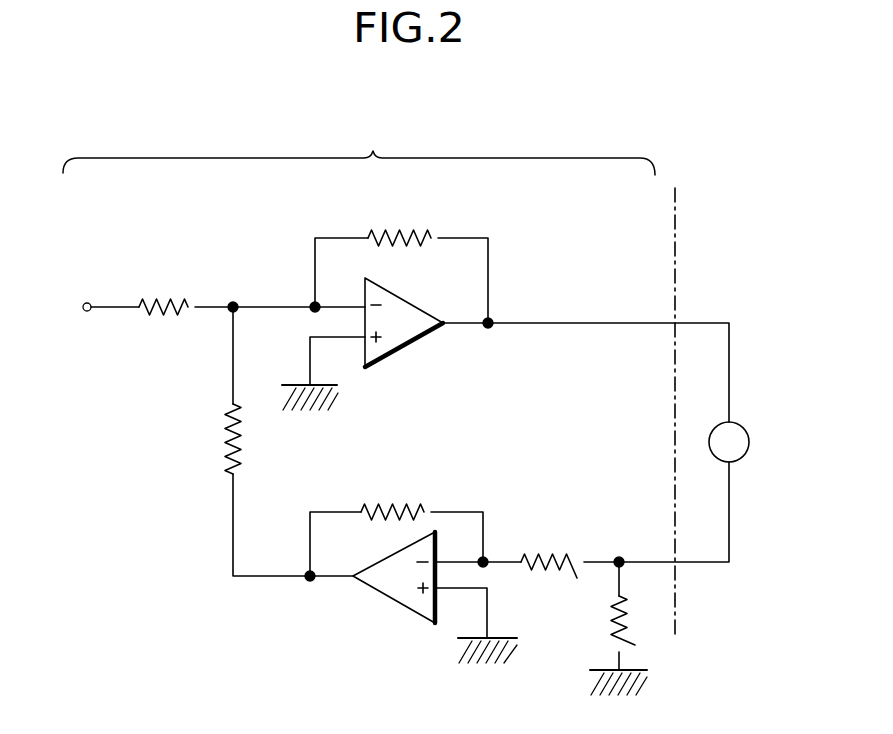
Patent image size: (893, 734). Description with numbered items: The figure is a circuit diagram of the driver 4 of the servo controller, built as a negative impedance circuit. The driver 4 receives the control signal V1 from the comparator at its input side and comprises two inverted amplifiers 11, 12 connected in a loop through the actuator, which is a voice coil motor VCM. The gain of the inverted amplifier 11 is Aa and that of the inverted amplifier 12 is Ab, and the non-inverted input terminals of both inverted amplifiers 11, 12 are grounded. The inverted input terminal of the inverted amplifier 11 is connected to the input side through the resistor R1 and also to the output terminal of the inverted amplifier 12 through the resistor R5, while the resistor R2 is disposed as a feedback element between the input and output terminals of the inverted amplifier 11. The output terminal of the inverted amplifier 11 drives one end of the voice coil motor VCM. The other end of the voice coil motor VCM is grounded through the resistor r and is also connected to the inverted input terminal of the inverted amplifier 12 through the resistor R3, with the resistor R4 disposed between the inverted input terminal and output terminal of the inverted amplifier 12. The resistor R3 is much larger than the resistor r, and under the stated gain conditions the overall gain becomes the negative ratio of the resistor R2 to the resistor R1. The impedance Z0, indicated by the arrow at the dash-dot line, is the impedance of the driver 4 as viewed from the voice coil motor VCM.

The driver 4 is at (359, 147).
The inverted amplifier 11 is at (408, 348).
The inverted amplifier 12 is at (382, 597).
The resistor R1 is at (163, 291).
The resistor R2 is at (401, 260).
The resistor R3 is at (551, 550).
The resistor R4 is at (396, 524).
The resistor R5 is at (270, 441).
The resistor r is at (618, 628).
The control signal V1 is at (107, 310).
The impedance Z0 is at (675, 219).
The voice coil motor VCM is at (745, 423).